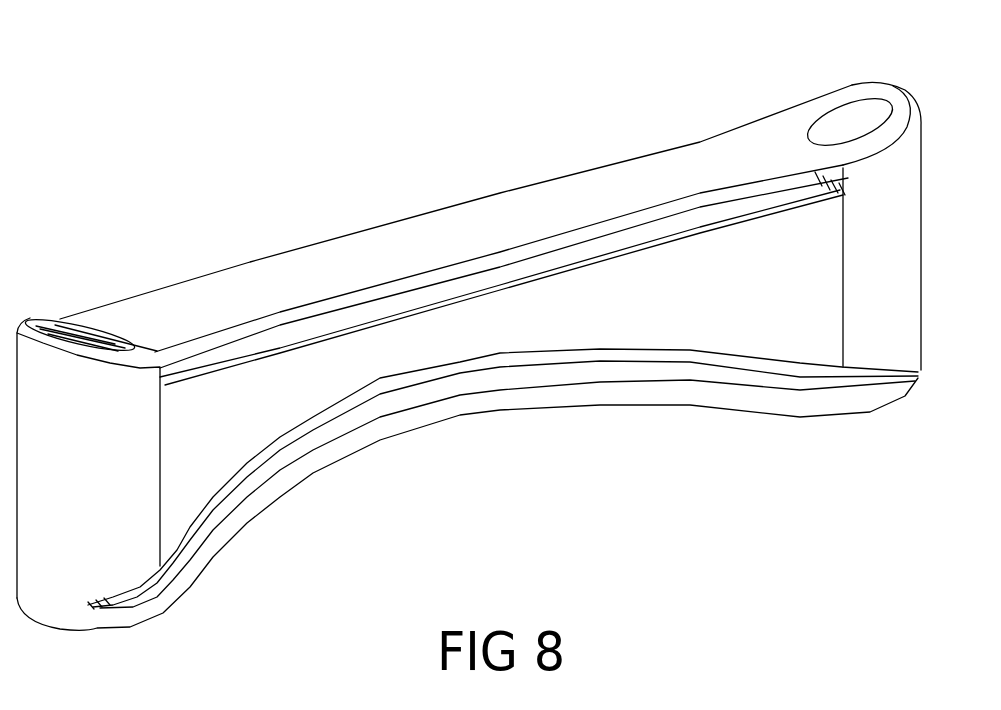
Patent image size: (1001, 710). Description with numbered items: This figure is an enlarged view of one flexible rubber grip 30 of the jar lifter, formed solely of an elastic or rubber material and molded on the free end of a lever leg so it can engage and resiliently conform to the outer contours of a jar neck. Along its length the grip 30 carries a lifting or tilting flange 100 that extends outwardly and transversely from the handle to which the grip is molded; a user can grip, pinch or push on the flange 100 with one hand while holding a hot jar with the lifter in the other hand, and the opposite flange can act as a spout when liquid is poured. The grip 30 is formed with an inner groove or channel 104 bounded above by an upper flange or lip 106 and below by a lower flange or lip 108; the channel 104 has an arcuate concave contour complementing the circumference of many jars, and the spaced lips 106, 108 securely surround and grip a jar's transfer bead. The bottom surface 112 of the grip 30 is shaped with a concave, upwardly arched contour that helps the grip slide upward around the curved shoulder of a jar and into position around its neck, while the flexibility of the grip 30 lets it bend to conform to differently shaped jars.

The flexible rubber grip 30 is at (348, 151).
The lifting or tilting flange 100 is at (220, 288).
The inner groove or channel 104 is at (431, 346).
The upper flange or lip 106 is at (598, 250).
The lower flange or lip 108 is at (548, 373).
The bottom surface 112 is at (347, 452).